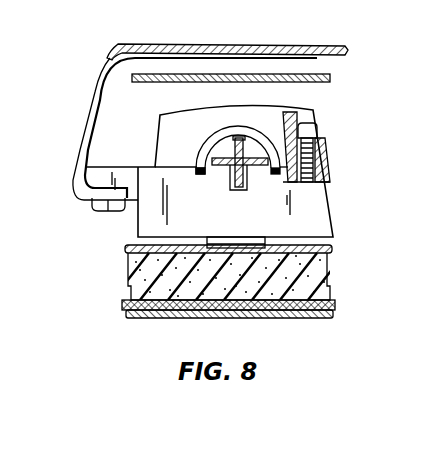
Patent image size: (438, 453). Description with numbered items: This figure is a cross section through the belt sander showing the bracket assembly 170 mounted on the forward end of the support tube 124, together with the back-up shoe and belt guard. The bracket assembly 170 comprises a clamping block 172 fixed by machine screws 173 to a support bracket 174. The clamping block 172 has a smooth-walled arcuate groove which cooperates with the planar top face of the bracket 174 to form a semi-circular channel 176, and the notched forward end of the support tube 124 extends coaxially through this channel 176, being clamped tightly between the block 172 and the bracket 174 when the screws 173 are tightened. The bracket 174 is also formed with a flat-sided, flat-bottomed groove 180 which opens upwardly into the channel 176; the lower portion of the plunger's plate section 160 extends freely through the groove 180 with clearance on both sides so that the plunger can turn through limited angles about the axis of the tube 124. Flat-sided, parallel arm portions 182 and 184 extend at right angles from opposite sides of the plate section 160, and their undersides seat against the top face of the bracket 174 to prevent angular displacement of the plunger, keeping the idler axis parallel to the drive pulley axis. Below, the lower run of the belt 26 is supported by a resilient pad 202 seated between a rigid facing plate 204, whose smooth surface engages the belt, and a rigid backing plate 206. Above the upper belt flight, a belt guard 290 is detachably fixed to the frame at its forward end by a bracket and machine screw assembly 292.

The belt guard 290 is at (226, 46).
The belt 26 is at (332, 76).
The bracket and machine screw assembly 292 is at (91, 120).
The support bracket 174 is at (334, 216).
The semi-circular channel 176 is at (216, 141).
The arm portion 182 is at (225, 120).
The support tube 124 is at (200, 162).
The arm portion 184 is at (253, 166).
The groove 180 is at (241, 190).
The plate section 160 is at (231, 172).
The bracket assembly 170 is at (330, 151).
The machine screws 173 is at (360, 108).
The clamping block 172 is at (324, 133).
The backing plate 206 is at (335, 251).
The resilient pad 202 is at (318, 272).
The facing plate 204 is at (337, 304).